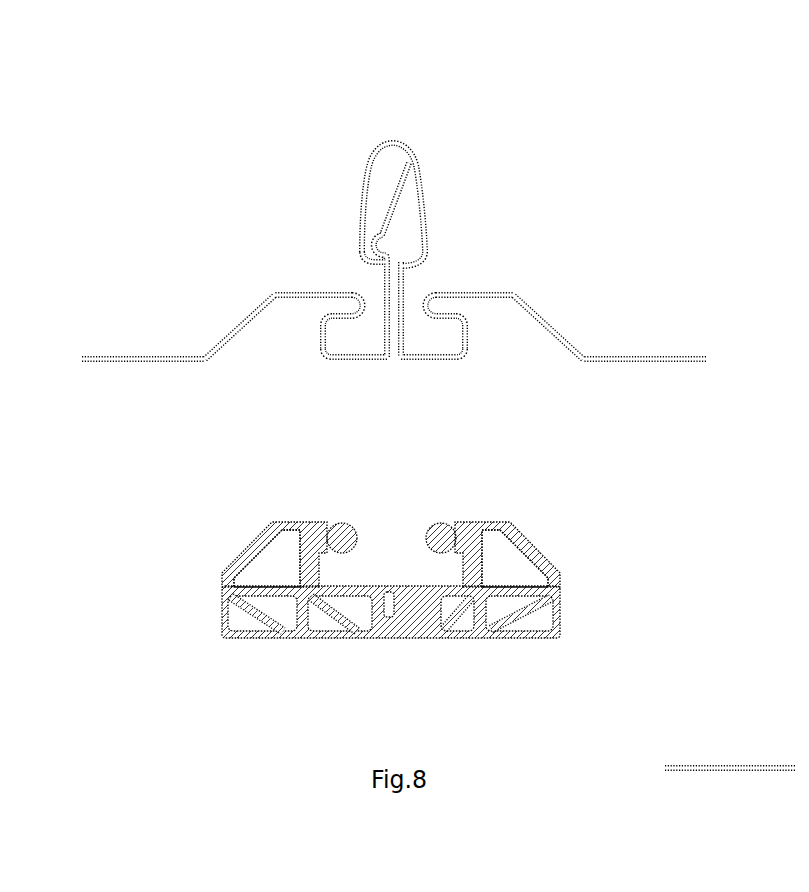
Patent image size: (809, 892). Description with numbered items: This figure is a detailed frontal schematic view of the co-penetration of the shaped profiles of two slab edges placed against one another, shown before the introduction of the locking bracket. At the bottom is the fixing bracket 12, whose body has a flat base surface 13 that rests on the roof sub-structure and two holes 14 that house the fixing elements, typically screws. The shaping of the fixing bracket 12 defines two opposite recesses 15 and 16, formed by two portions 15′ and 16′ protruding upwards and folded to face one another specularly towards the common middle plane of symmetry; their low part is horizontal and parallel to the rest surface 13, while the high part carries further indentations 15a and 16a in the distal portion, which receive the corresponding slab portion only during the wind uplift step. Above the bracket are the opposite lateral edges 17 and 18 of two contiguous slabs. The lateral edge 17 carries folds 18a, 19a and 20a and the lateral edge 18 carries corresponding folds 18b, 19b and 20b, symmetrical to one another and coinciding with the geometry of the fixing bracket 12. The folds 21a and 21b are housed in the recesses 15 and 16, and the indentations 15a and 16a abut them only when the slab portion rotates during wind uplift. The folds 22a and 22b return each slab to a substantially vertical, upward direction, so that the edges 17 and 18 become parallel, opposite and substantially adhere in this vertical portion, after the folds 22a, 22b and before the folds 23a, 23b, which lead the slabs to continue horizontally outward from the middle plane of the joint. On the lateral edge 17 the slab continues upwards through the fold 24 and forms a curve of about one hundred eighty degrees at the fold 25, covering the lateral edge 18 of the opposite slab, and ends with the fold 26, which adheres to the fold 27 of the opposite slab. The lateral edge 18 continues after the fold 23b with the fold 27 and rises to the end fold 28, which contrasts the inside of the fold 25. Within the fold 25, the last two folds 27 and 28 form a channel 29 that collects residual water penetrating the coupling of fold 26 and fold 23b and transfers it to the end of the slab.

The fixing bracket 12 is at (574, 539).
The flat base surface 13 is at (385, 640).
The holes 14 is at (404, 583).
The recess 15 is at (315, 558).
The protruding portion 15′ is at (330, 521).
The indentation 15a is at (326, 551).
The recess 16 is at (468, 572).
The protruding portion 16′ is at (463, 520).
The indentation 16a is at (458, 550).
The lateral edge 17 is at (544, 201).
The lateral edge 18 is at (146, 141).
The fold 18a is at (572, 362).
The fold 18b is at (207, 362).
The fold 19a is at (513, 292).
The fold 19b is at (274, 292).
The fold 20a is at (423, 313).
The fold 20b is at (360, 312).
The fold 21a is at (465, 358).
The fold 21b is at (315, 352).
The fold 22a is at (399, 365).
The fold 22b is at (383, 365).
The fold 23a is at (398, 257).
The fold 23b is at (387, 258).
The fold 24 is at (424, 258).
The fold 25 is at (391, 140).
The fold 26 is at (360, 258).
The fold 27 is at (385, 232).
The end fold 28 is at (393, 141).
The channel 29 is at (295, 118).